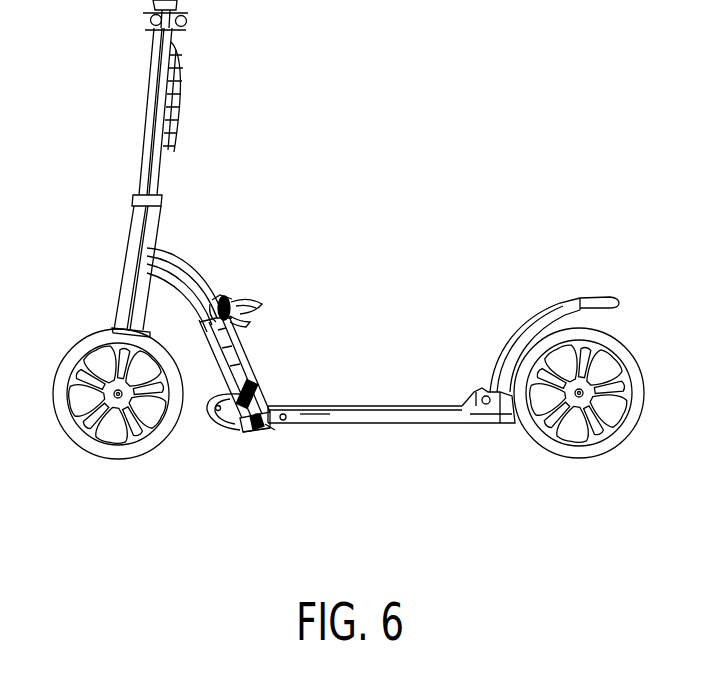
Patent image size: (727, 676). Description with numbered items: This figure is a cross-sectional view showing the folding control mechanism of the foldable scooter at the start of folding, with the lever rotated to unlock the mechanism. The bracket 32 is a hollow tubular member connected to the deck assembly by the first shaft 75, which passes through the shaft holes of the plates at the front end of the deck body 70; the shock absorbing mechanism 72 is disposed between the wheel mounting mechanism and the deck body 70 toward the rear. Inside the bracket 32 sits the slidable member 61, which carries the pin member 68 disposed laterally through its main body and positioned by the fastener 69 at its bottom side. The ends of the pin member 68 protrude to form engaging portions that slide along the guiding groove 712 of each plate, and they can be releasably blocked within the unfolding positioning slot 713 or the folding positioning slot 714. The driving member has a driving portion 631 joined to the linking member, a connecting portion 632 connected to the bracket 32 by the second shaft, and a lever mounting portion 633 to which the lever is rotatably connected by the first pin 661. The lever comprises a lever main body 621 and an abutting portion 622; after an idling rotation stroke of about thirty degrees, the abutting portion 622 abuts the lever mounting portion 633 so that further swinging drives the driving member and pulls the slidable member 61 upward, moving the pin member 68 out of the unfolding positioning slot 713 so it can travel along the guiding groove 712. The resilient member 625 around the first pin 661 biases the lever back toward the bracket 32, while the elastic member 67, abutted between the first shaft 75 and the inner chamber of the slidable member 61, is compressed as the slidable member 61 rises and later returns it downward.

The bracket 32 is at (180, 250).
The first pin 661 is at (141, 263).
The connecting portion 632 is at (190, 315).
The lever mounting portion 633 is at (226, 300).
The abutting portion 622 is at (232, 304).
The lever main body 621 is at (252, 308).
The resilient member 625 is at (232, 312).
The driving portion 631 is at (215, 344).
The slidable member 61 is at (243, 371).
The first shaft 75 is at (260, 384).
The elastic member 67 is at (263, 398).
The deck body 70 is at (410, 407).
The shock absorbing mechanism 72 is at (450, 427).
The guiding groove 712 is at (223, 427).
The folding positioning slot 714 is at (213, 417).
The pin member 68 is at (253, 436).
The unfolding positioning slot 713 is at (258, 434).
The fastener 69 is at (272, 432).